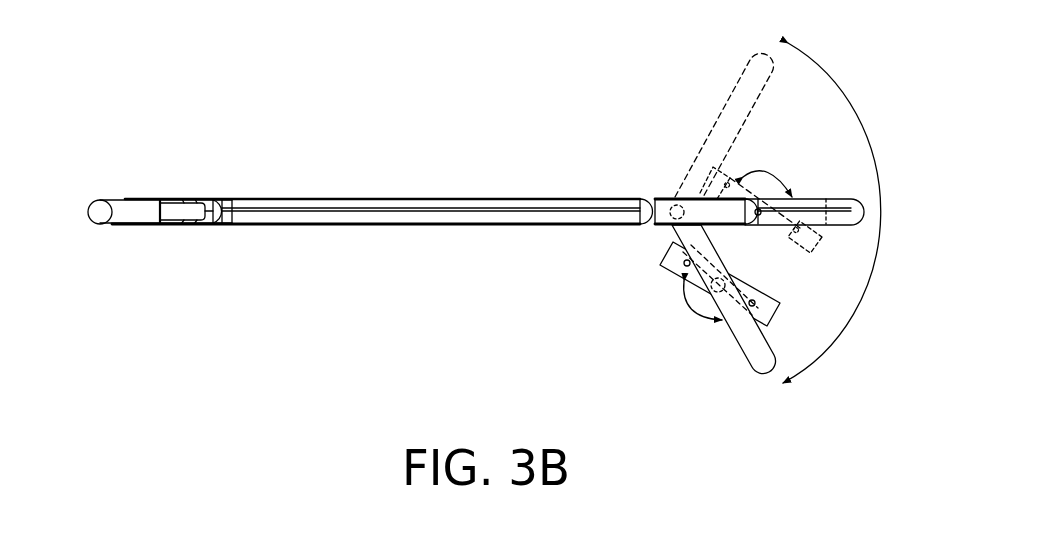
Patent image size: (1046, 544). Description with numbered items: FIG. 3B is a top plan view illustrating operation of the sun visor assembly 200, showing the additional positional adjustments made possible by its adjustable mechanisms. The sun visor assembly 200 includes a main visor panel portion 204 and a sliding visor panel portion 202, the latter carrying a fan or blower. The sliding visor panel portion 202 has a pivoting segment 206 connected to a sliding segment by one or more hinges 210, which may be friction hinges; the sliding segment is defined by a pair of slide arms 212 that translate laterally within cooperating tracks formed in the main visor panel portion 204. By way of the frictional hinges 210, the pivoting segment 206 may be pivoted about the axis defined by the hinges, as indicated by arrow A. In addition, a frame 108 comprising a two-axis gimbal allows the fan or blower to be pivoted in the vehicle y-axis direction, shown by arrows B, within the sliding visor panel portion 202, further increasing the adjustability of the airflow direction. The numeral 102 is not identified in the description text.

The sun visor assembly 200 is at (243, 130).
The end cap 102 is at (178, 199).
The slide arms 212 is at (398, 199).
The main visor panel portion 204 is at (232, 225).
The hinges 210 is at (675, 197).
The pivoting segment 206 is at (748, 57).
The frame 108 is at (820, 245).
The sliding visor panel portion 202 is at (645, 262).